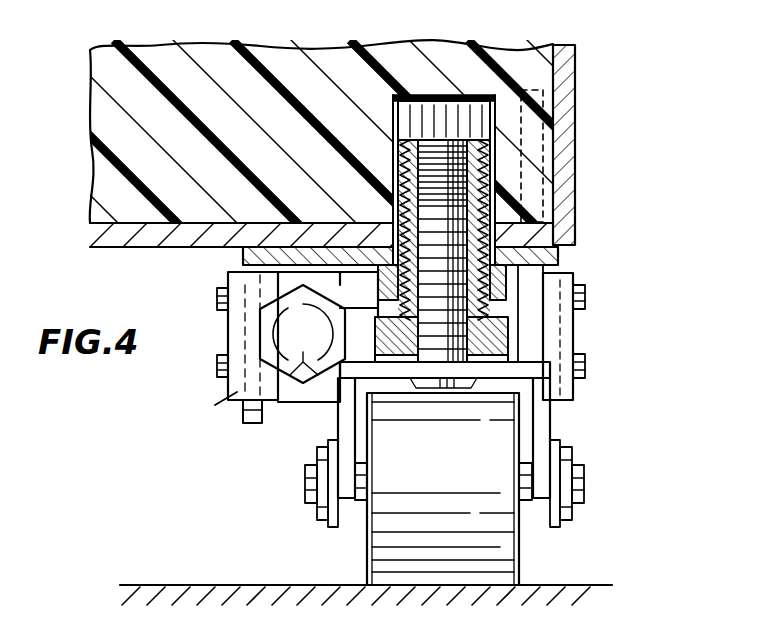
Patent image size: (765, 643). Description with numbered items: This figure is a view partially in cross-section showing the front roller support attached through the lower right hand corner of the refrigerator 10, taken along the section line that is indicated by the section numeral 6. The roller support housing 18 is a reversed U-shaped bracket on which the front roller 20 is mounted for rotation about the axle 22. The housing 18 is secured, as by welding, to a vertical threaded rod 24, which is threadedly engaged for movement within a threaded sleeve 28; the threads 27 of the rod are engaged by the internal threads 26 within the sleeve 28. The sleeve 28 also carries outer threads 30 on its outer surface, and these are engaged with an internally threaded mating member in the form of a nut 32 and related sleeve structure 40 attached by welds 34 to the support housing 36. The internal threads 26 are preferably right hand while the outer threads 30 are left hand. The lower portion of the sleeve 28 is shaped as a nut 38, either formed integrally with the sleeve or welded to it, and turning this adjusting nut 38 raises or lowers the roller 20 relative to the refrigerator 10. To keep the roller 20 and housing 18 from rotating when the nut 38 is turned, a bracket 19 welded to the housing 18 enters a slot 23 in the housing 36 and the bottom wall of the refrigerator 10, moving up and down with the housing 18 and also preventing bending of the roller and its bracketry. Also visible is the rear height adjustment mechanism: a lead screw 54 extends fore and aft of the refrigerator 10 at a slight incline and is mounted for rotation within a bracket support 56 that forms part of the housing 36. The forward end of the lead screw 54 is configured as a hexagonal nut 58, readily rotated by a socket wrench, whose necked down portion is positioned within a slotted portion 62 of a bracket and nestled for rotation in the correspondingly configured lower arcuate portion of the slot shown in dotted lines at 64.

The section line indicator 6 is at (215, 423).
The refrigerator 10 is at (581, 164).
The roller support housing 18 is at (545, 433).
The bracket 19 is at (545, 320).
The front roller 20 is at (438, 458).
The axle 22 is at (362, 500).
The slot 23 is at (555, 223).
The vertical threaded rod 24 is at (420, 222).
The internal threads 26 is at (473, 173).
The threads 27 is at (457, 96).
The threaded sleeve 28 is at (395, 166).
The outer threads 30 is at (396, 142).
The nut 32 is at (505, 292).
The welds 34 is at (429, 292).
The support housing 36 is at (560, 257).
The nut 38 is at (545, 341).
The sleeve structure 40 is at (407, 96).
The lead screw 54 is at (230, 322).
The bracket support 56 is at (236, 335).
The nut 58 is at (277, 293).
The slotted portion 62 is at (278, 276).
The lower arcuate portion of the slot 64 is at (299, 388).